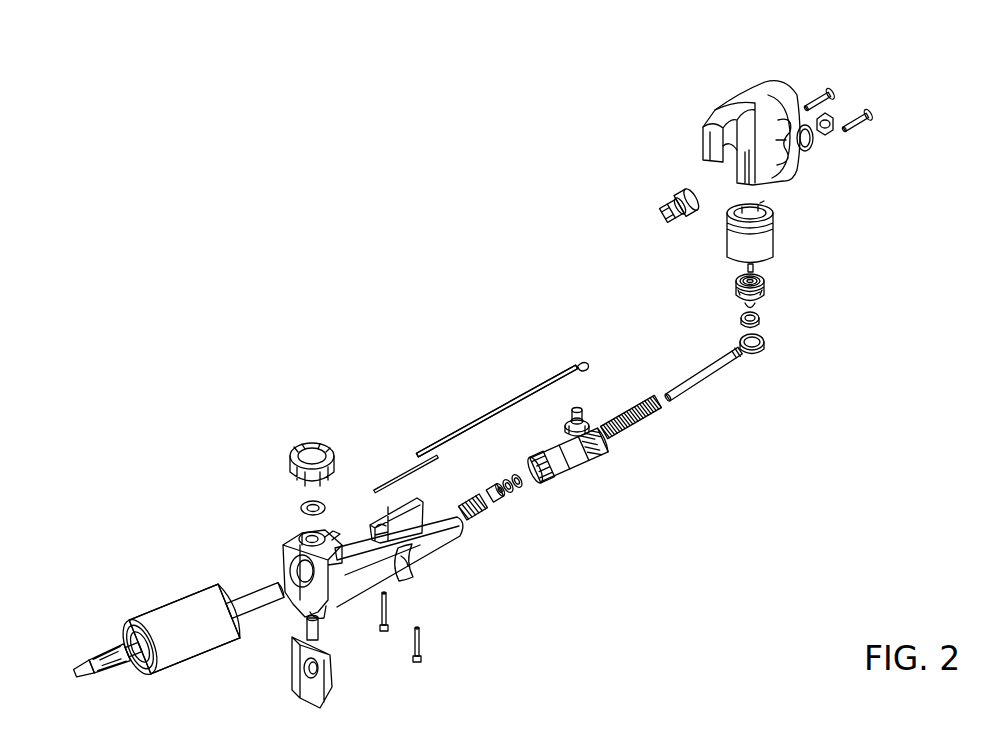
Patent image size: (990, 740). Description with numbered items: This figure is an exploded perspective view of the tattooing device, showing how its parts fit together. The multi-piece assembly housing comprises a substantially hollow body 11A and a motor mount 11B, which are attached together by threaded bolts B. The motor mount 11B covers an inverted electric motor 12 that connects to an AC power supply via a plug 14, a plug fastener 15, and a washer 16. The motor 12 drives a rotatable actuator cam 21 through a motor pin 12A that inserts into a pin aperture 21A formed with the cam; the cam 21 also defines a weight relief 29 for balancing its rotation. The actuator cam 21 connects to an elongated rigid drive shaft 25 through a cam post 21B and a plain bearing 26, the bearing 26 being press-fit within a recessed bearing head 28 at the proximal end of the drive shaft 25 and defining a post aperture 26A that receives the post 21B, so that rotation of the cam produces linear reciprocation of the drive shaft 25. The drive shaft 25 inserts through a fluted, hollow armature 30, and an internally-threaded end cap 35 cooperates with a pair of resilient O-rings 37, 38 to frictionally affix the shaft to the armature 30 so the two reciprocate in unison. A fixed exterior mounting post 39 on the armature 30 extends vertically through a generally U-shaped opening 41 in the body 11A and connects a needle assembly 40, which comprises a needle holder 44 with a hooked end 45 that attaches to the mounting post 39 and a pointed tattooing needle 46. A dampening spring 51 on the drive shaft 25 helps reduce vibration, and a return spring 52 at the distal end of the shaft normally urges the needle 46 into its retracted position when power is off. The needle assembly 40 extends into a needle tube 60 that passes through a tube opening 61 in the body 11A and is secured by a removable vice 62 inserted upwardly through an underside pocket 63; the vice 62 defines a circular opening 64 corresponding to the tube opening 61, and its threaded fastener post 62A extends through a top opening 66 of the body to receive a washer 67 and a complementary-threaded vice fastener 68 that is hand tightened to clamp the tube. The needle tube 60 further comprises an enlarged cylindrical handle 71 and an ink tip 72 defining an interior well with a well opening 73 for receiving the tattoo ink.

The hollow body 11A is at (290, 580).
The motor mount 11B is at (732, 96).
The electric motor 12 is at (775, 236).
The motor pin 12A is at (745, 268).
The plug 14 is at (668, 197).
The plug fastener 15 is at (831, 132).
The washer 16 is at (808, 152).
The actuator cam 21 is at (737, 295).
The pin aperture 21A is at (760, 280).
The cam post 21B is at (762, 307).
The drive shaft 25 is at (700, 378).
The plain bearing 26 is at (744, 322).
The post aperture 26A is at (761, 318).
The bearing head 28 is at (762, 336).
The weight relief 29 is at (768, 291).
The armature 30 is at (562, 466).
The end cap 35 is at (493, 485).
The O-ring 37 is at (508, 477).
The O-ring 38 is at (519, 490).
The mounting post 39 is at (584, 415).
The needle assembly 40 is at (456, 426).
The U-shaped opening 41 is at (368, 533).
The needle holder 44 is at (512, 403).
The hooked end 45 is at (580, 364).
The tattooing needle 46 is at (395, 478).
The dampening spring 51 is at (628, 420).
The return spring 52 is at (468, 500).
The needle tube 60 is at (192, 569).
The tube opening 61 is at (288, 600).
The vice 62 is at (297, 700).
The fastener post 62A is at (318, 640).
The underside pocket 63 is at (325, 606).
The vice opening 64 is at (302, 667).
The top opening 66 is at (300, 532).
The washer 67 is at (302, 503).
The vice fastener 68 is at (307, 440).
The cylindrical handle 71 is at (157, 615).
The ink tip 72 is at (112, 665).
The well opening 73 is at (105, 665).
The threaded bolts B is at (877, 120).